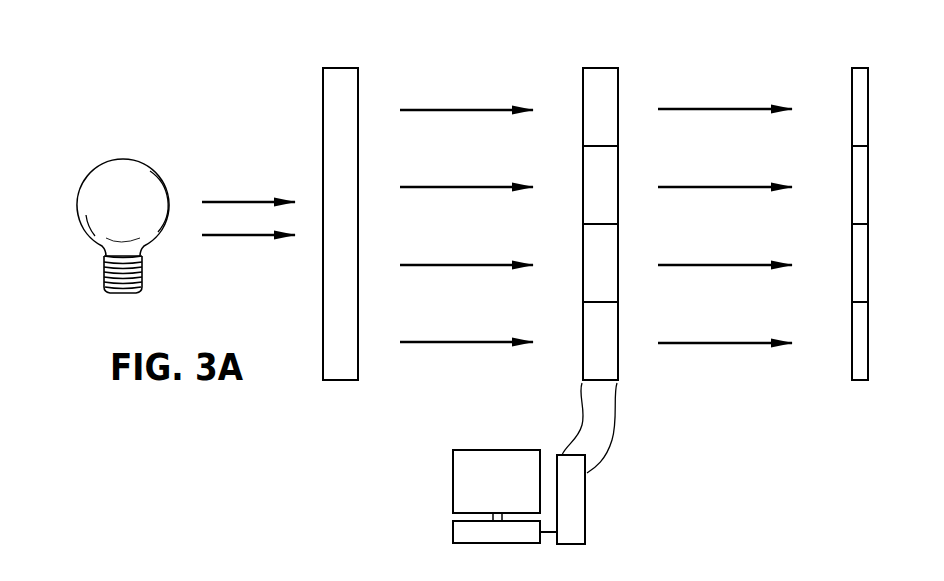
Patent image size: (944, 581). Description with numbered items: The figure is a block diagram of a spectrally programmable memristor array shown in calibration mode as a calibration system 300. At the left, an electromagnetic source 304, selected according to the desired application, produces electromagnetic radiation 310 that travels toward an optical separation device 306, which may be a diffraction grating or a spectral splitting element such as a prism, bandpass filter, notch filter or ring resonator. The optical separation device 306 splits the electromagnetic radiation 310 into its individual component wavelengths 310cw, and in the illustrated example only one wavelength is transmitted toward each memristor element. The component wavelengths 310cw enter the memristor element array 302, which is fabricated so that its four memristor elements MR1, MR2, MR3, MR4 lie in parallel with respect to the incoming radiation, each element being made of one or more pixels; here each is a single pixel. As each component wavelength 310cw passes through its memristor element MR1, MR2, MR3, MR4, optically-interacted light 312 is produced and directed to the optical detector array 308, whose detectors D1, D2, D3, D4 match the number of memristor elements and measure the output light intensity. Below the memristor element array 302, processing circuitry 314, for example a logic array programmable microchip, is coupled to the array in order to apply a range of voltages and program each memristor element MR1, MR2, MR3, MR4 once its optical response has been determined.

The calibration system 300 is at (190, 50).
The memristor element array 302 is at (600, 67).
The electromagnetic source 304 is at (125, 162).
The optical separation device 306 is at (323, 115).
The optical detector array 308 is at (860, 67).
The electromagnetic radiation 310 is at (258, 235).
The component wavelengths 310cw is at (473, 340).
The optically-interacted light 312 is at (735, 107).
The processing circuitry 314 is at (453, 482).
The memristor element MR1 is at (583, 133).
The memristor element MR2 is at (583, 211).
The memristor element MR3 is at (583, 289).
The memristor element MR4 is at (583, 367).
The detector D1 is at (852, 133).
The detector D2 is at (852, 211).
The detector D3 is at (852, 289).
The detector D4 is at (852, 367).